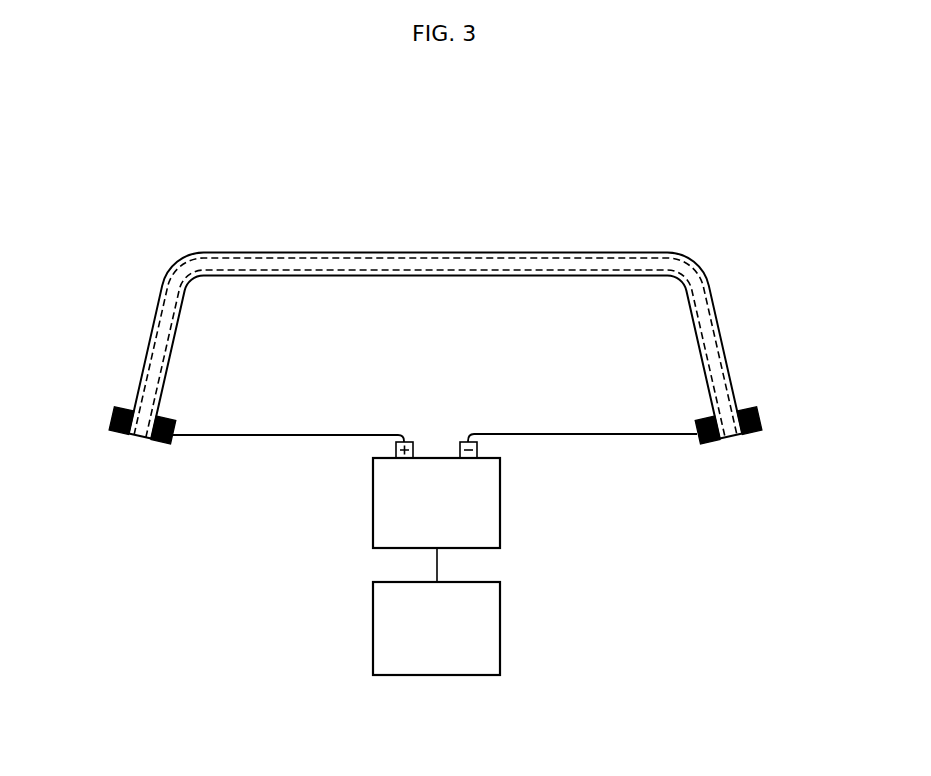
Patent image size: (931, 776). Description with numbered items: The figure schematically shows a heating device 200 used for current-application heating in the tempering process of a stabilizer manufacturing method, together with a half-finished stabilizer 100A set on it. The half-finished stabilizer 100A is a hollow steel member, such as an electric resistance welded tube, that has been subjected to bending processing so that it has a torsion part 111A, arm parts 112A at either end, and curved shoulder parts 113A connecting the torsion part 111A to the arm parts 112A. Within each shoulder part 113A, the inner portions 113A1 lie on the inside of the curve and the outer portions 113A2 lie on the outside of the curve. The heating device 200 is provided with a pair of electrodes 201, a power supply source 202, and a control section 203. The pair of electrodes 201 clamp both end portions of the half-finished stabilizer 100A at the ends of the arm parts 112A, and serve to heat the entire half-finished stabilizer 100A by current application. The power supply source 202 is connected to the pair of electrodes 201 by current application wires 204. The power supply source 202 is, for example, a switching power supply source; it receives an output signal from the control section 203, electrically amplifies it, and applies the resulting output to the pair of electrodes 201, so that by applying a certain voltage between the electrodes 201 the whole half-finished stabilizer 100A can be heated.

The half-finished stabilizer 100A is at (440, 310).
The torsion part 111A is at (416, 253).
The arm parts 112A is at (143, 378).
The shoulder parts 113A is at (227, 234).
The inner portions of the shoulder parts 113A1 is at (198, 284).
The outer portions of the shoulder parts 113A2 is at (187, 263).
The heating device 200 is at (448, 554).
The pair of electrodes 201 is at (108, 427).
The power supply source 202 is at (496, 509).
The control section 203 is at (496, 636).
The current application wires 204 is at (260, 437).